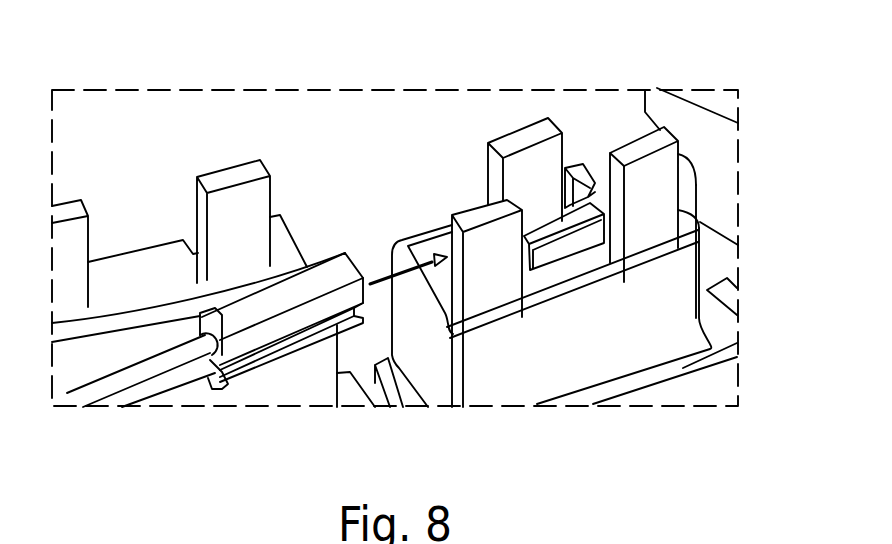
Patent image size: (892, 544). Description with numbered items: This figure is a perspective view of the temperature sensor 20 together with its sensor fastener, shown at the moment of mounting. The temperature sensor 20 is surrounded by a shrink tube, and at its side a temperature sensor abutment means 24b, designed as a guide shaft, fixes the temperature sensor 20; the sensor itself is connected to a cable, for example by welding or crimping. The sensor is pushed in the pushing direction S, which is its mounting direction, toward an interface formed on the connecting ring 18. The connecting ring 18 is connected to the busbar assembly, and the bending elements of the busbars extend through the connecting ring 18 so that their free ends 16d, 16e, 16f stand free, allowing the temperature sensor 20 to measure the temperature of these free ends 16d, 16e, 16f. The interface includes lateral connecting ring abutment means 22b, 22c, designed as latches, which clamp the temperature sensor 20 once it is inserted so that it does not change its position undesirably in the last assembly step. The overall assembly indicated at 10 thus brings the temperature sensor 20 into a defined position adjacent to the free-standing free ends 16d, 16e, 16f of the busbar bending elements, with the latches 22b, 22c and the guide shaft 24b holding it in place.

The connector arrangement 10 is at (568, 112).
The free end 16d is at (667, 152).
The free end 16e is at (515, 145).
The free end 16f is at (490, 290).
The connecting ring 18 is at (638, 325).
The temperature sensor 20 is at (290, 363).
The connecting ring abutment means 22b is at (570, 242).
The connecting ring abutment means 22c is at (578, 167).
The temperature sensor abutment means 24b is at (222, 390).
The pushing direction S is at (388, 278).